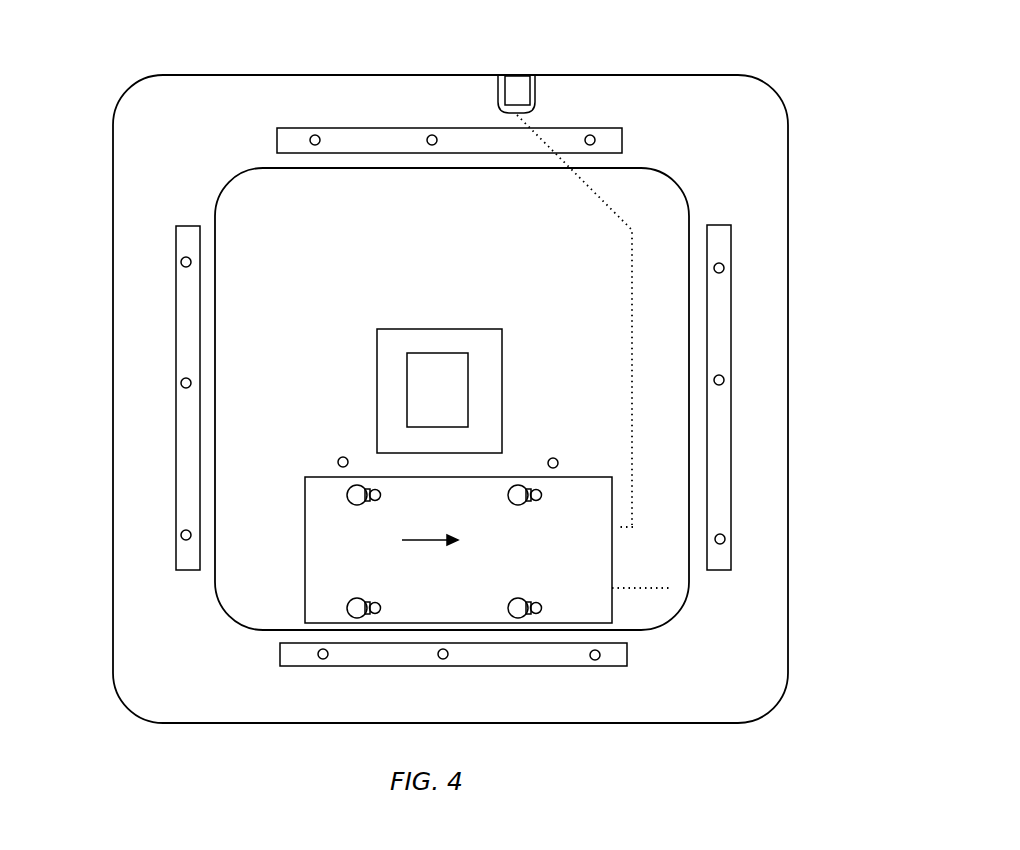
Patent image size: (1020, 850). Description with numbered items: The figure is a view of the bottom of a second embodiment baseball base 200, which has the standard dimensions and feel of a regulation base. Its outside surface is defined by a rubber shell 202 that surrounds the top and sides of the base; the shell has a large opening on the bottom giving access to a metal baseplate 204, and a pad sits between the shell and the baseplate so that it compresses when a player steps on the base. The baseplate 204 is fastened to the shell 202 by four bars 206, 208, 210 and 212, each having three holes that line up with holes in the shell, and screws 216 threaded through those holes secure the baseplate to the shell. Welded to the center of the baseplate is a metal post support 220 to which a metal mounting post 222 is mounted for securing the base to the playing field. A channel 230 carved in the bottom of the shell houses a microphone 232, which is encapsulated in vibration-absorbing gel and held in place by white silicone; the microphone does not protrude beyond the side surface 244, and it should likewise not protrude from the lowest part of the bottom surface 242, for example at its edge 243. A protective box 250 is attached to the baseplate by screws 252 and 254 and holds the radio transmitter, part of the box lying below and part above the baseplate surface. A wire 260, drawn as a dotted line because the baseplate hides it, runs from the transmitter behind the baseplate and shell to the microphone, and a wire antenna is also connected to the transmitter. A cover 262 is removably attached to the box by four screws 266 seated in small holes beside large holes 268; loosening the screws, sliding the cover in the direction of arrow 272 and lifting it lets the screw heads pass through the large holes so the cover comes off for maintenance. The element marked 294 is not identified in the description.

The baseball base 200 is at (813, 152).
The rubber shell 202 is at (777, 300).
The baseplate 204 is at (278, 268).
The bar 206 is at (622, 656).
The bar 208 is at (728, 458).
The bar 210 is at (289, 133).
The bar 212 is at (183, 427).
The screws 216 is at (316, 135).
The post support 220 is at (502, 375).
The mounting post 222 is at (433, 350).
The channel 230 is at (537, 102).
The microphone 232 is at (517, 88).
The bottom surface 242 is at (688, 710).
The edge 243 is at (322, 75).
The side surface 244 is at (700, 75).
The protective box 250 is at (315, 590).
The screw 252 is at (340, 458).
The screw 254 is at (555, 459).
The wire 260 is at (628, 340).
The cover 262 is at (627, 585).
The screws 266 is at (381, 496).
The large holes 268 is at (522, 487).
The arrow 272 is at (456, 541).
The lower edge 294 is at (612, 600).